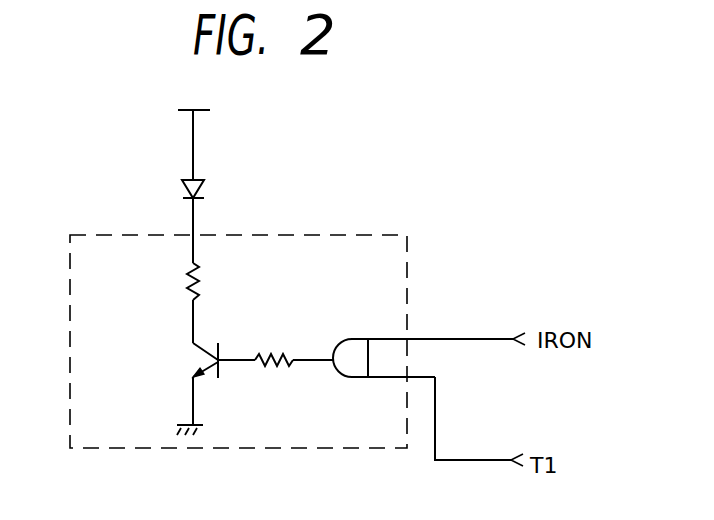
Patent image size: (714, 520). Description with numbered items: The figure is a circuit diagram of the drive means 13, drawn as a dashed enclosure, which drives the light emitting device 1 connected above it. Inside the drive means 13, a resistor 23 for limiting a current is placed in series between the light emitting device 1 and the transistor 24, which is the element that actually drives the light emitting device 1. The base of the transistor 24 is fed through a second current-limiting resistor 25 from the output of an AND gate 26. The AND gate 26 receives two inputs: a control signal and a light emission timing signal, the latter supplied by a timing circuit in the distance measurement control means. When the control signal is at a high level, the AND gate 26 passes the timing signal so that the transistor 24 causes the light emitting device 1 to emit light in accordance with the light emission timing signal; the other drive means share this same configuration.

The light emitting device 1 is at (205, 187).
The drive means 13 is at (410, 257).
The resistor 23 is at (204, 276).
The transistor 24 is at (187, 362).
The resistor 25 is at (270, 370).
The AND gate 26 is at (348, 337).